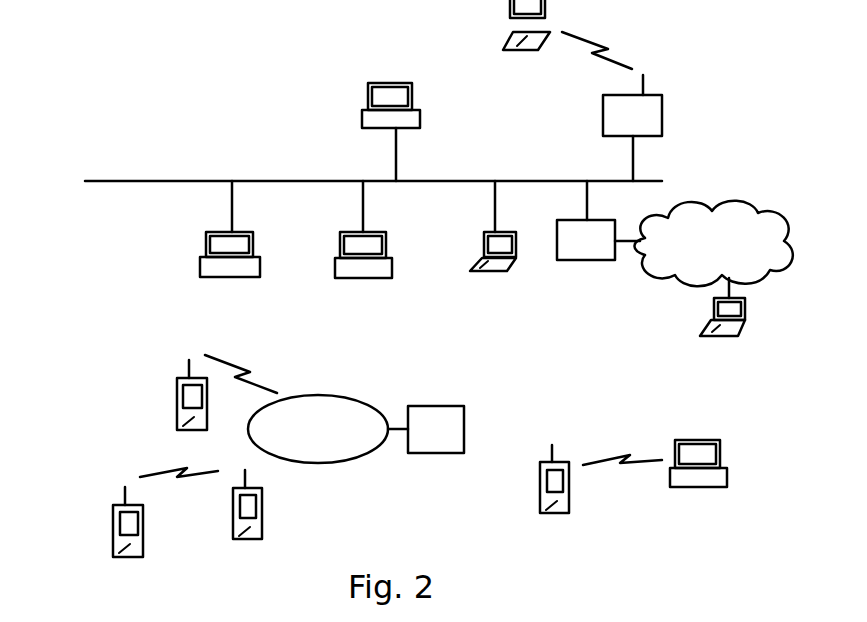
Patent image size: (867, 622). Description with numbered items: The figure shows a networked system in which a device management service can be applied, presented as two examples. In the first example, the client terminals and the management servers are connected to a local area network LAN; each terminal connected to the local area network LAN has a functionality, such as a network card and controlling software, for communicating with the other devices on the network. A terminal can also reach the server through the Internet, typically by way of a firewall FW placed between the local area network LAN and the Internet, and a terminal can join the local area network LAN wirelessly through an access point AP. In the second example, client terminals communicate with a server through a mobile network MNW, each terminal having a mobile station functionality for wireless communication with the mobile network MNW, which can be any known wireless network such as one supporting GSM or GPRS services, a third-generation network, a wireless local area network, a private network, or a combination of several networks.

The local area network LAN is at (125, 183).
The wireless access point AP is at (632, 128).
The firewall FW is at (586, 220).
The element Internet is at (713, 244).
The mobile network MNW is at (318, 429).